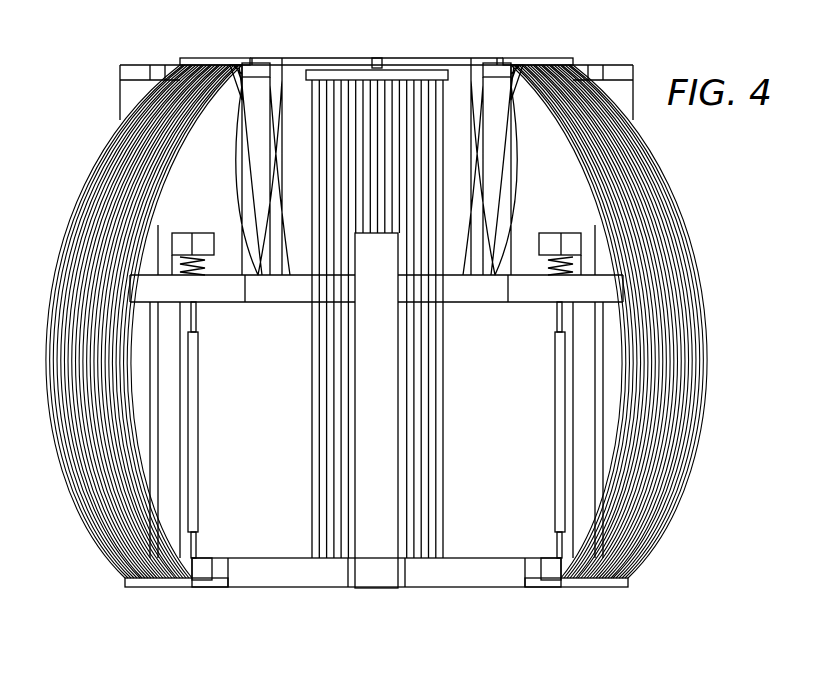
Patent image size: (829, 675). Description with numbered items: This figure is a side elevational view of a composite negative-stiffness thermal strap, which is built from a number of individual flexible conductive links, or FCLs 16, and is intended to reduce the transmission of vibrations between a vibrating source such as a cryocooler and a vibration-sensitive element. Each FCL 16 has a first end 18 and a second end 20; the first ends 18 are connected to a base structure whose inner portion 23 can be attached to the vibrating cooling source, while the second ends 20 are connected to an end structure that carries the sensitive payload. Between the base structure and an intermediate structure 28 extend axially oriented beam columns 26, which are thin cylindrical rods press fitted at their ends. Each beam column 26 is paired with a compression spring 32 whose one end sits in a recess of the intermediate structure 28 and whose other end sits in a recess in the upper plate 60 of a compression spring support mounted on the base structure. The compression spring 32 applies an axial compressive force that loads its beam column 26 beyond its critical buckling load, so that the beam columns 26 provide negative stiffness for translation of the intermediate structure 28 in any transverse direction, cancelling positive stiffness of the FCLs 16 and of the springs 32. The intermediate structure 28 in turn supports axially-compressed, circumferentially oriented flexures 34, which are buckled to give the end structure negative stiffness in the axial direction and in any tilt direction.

The flexible conductive link (FCL) 16 is at (115, 150).
The first end 18 is at (202, 573).
The second end 20 is at (215, 58).
The inner portion 23 is at (453, 577).
The beam column 26 is at (194, 366).
The intermediate structure 28 is at (297, 297).
The compression spring 32 is at (187, 258).
The circumferentially oriented flexure 34 is at (430, 60).
The upper plate 60 is at (201, 232).